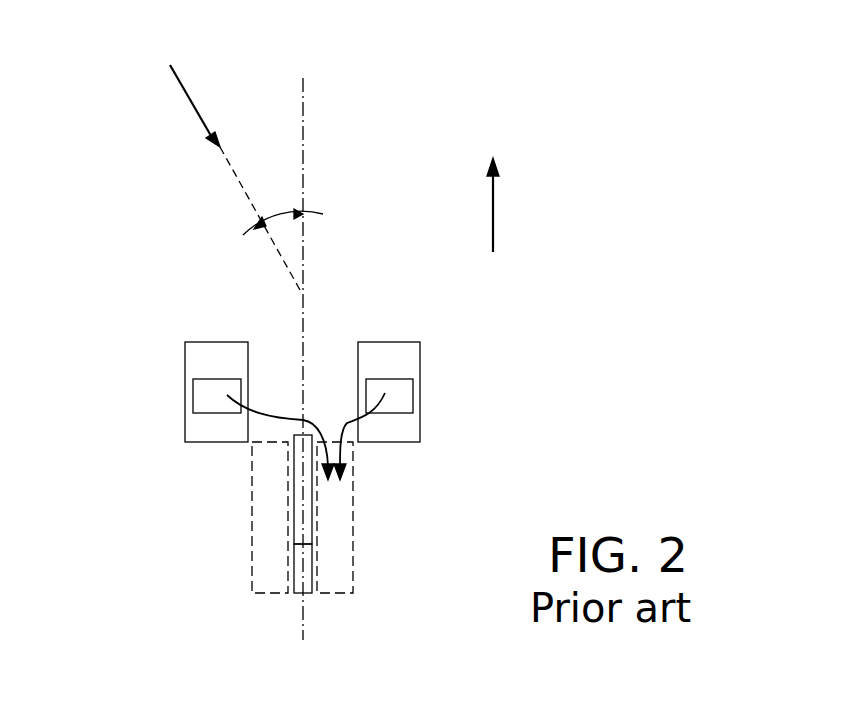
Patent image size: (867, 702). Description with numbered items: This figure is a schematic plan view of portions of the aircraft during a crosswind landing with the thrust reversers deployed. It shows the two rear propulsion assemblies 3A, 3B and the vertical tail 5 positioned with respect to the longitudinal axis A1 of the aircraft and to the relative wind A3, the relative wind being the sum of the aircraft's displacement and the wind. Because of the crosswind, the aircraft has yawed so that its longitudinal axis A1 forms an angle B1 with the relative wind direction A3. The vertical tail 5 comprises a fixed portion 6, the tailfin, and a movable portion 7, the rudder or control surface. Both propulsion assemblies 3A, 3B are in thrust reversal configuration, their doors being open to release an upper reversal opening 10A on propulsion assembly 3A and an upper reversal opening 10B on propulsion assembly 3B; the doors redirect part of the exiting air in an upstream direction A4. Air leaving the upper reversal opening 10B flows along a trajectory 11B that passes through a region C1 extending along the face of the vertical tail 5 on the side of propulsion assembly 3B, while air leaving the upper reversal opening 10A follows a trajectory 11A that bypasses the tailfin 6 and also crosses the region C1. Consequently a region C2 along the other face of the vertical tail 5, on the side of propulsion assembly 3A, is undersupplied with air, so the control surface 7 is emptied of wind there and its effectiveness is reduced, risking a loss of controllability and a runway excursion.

The longitudinal axis A1 is at (305, 85).
The relative wind A3 is at (200, 98).
The upstream direction A4 is at (495, 203).
The angle B1 is at (278, 212).
The propulsion assembly 3A is at (203, 348).
The propulsion assembly 3B is at (408, 348).
The upper reversal opening 10A is at (192, 388).
The upper reversal opening 10B is at (413, 400).
The trajectory 11A is at (282, 413).
The trajectory 11B is at (343, 413).
The vertical tail 5 is at (387, 514).
The fixed portion 6 is at (307, 511).
The movable portion 7 is at (307, 568).
The region C1 is at (343, 585).
The region C2 is at (253, 585).